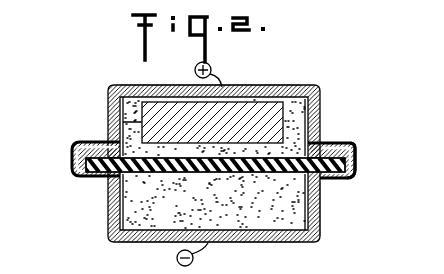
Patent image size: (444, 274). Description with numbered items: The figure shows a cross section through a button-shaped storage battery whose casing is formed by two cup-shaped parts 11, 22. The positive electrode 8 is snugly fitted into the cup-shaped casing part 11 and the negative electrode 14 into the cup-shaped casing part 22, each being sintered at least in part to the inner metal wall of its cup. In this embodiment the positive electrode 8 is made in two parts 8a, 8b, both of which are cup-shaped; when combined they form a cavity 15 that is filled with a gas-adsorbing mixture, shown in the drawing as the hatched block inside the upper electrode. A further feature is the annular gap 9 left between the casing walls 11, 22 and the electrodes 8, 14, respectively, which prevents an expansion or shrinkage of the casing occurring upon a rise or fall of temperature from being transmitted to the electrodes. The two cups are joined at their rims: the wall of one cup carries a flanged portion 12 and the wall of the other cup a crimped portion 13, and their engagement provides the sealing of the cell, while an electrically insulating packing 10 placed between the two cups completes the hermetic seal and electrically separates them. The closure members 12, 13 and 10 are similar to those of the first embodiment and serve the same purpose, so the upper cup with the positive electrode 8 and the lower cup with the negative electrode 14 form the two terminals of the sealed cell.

The positive electrode 8 is at (231, 148).
The first part of positive electrode 8a is at (305, 106).
The second part of positive electrode 8b is at (304, 133).
The annular gap 9 is at (122, 120).
The electrically insulating packing 10 is at (336, 175).
The cup-shaped casing part 11 is at (169, 87).
The flanged portion 12 is at (327, 144).
The crimped portion 13 is at (352, 145).
The negative electrode 14 is at (155, 220).
The cavity 15 is at (246, 112).
The cup-shaped casing part 22 is at (266, 243).